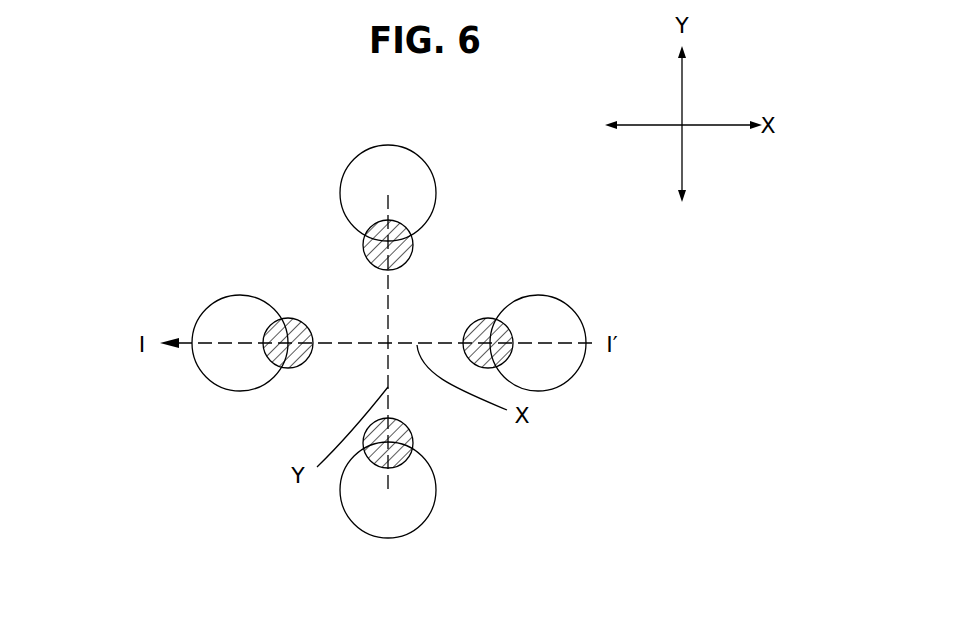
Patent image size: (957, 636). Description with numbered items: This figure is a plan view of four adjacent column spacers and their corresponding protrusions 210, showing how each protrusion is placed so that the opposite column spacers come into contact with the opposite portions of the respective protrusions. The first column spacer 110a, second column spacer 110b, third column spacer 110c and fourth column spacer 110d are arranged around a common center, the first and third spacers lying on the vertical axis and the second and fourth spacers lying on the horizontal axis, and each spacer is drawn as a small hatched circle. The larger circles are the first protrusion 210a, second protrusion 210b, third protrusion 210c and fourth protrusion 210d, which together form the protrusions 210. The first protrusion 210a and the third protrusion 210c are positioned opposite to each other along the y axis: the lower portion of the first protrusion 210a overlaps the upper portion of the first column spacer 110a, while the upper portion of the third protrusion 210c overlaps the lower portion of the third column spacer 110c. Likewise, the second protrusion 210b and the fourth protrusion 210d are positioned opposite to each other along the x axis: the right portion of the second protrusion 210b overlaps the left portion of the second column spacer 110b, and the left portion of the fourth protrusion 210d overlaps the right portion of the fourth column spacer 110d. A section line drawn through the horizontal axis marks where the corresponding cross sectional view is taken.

The first column spacer 110a is at (366, 252).
The second column spacer 110b is at (293, 368).
The third column spacer 110c is at (410, 428).
The fourth column spacer 110d is at (488, 322).
The protrusions 210 is at (520, 364).
The first protrusion 210a is at (420, 190).
The second protrusion 210b is at (228, 370).
The third protrusion 210c is at (417, 505).
The fourth protrusion 210d is at (567, 321).